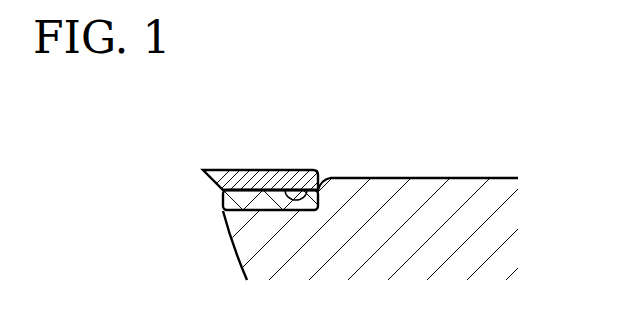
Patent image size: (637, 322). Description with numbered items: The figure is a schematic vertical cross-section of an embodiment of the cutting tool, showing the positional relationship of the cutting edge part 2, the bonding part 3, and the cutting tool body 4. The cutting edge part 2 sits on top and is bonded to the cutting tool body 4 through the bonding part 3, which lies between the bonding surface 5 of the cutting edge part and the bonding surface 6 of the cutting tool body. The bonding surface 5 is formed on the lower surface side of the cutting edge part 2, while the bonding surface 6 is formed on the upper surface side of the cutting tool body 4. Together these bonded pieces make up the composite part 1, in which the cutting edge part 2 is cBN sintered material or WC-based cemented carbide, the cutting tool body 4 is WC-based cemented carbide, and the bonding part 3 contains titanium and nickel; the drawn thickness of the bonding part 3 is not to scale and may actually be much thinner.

The composite part 1 is at (446, 140).
The cutting edge part 2 is at (265, 170).
The bonding part 3 is at (223, 200).
The cutting tool body 4 is at (236, 256).
The bonding surface of the cutting edge part 5 is at (302, 190).
The bonding surface of the cutting tool body 6 is at (236, 194).